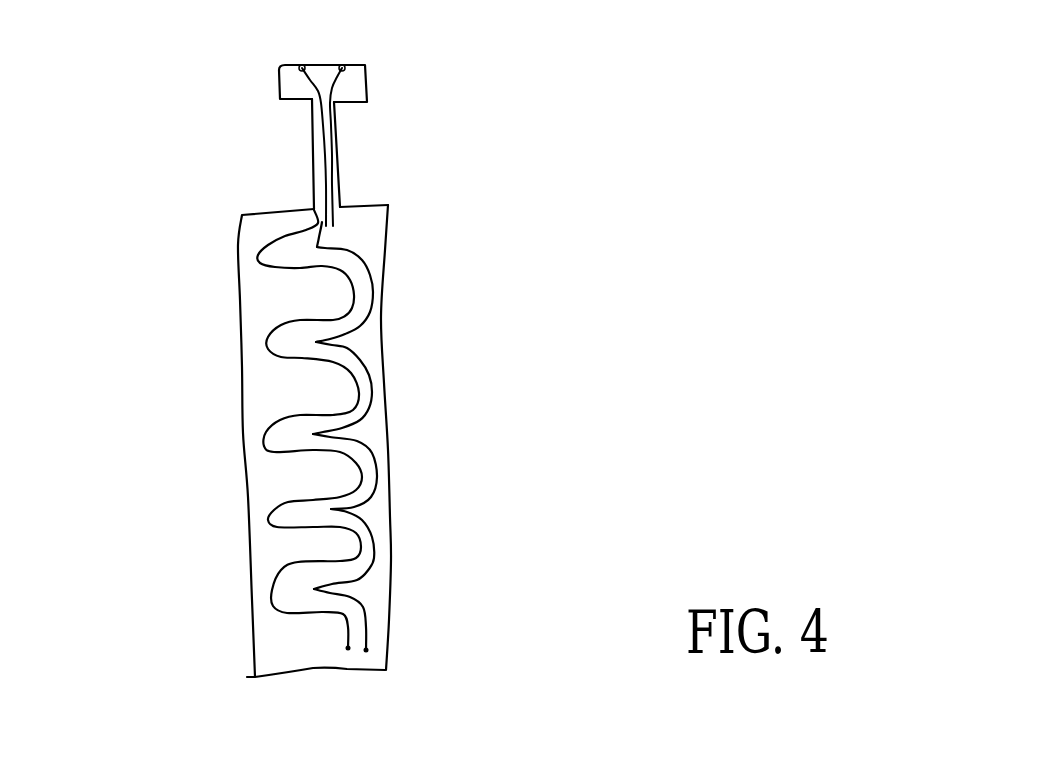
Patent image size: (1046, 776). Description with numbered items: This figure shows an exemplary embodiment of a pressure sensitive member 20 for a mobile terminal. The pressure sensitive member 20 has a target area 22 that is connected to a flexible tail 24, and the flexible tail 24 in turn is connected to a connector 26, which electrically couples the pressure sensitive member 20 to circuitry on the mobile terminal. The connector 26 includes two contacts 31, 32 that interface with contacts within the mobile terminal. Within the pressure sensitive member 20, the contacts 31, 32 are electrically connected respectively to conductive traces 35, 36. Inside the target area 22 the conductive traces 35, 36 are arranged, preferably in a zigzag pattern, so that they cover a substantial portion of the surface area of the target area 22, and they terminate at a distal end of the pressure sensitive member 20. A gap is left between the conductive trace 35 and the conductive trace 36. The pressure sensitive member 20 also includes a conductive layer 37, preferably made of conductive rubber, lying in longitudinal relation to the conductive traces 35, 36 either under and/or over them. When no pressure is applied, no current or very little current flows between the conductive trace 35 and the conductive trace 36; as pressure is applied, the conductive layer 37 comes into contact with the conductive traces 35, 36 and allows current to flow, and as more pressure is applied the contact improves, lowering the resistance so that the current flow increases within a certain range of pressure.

The pressure sensitive member 20 is at (432, 315).
The target area 22 is at (389, 423).
The flexible tail 24 is at (346, 160).
The connector 26 is at (372, 92).
The contact 31 is at (343, 66).
The contact 32 is at (301, 66).
The conductive trace 35 is at (318, 246).
The conductive trace 36 is at (300, 234).
The conductive layer 37 is at (282, 477).